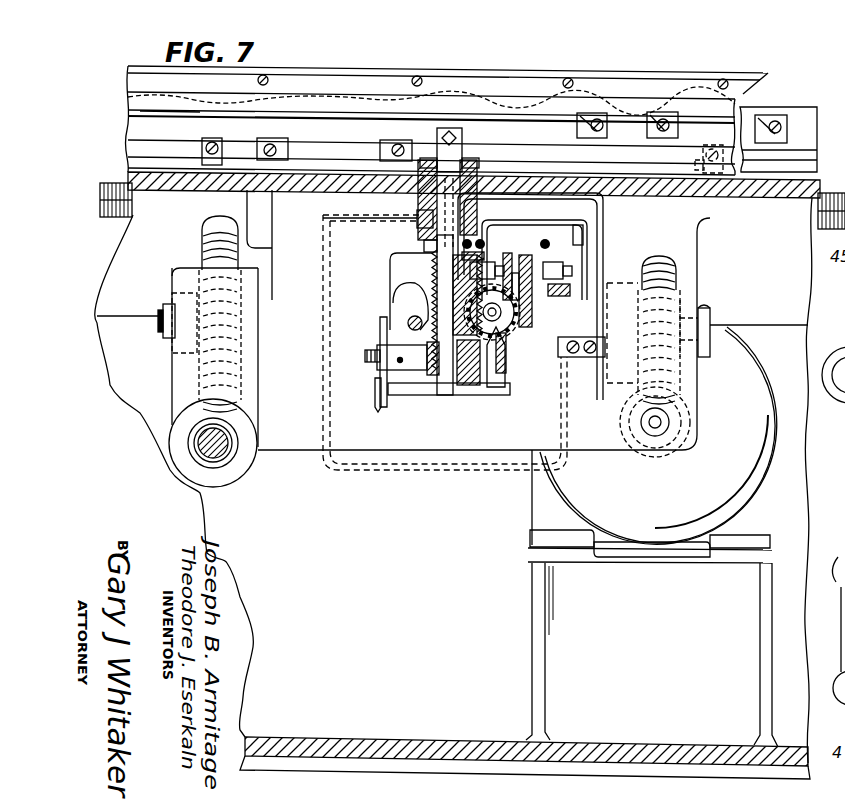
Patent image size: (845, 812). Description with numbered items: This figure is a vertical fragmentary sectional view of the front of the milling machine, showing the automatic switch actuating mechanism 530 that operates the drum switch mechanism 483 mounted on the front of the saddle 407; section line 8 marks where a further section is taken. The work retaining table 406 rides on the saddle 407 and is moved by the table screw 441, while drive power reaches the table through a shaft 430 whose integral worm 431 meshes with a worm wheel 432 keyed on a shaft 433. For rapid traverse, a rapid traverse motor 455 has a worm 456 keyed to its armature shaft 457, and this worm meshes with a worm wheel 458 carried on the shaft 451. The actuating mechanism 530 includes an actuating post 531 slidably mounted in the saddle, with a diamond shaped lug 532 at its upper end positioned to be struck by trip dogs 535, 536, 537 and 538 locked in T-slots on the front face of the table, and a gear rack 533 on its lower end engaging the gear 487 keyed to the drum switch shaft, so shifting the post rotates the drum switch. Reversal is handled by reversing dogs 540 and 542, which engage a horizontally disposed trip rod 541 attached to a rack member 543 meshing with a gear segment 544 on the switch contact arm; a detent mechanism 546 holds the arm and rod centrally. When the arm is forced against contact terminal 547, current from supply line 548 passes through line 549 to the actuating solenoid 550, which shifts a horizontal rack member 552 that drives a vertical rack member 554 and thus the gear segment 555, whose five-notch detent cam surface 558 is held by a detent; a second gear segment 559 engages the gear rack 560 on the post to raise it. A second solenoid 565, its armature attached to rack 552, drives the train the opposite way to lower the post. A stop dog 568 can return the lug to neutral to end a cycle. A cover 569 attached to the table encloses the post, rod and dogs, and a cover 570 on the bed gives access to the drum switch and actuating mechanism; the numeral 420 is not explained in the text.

The section line 8- 8 is at (460, 40).
The table 406 is at (620, 76).
The saddle 407 is at (770, 197).
The drive member 420 is at (833, 622).
The shaft 430 is at (205, 438).
The worm 431 is at (217, 455).
The worm wheel 432 is at (232, 353).
The shaft 433 is at (162, 326).
The table screw 441 is at (109, 213).
The shaft 451 is at (710, 314).
The rapid traverse motor 455 is at (752, 376).
The worm 456 is at (682, 418).
The motor armature shaft 457 is at (660, 440).
The worm wheel 458 is at (662, 256).
The drum switch mechanism 483 is at (375, 306).
The gear 487 is at (398, 380).
The automatic actuating mechanism 530 is at (432, 407).
The actuating post 531 is at (437, 260).
The diamond shaped lug 532 is at (464, 137).
The gear rack 533 is at (453, 283).
The trip dog 535 is at (392, 135).
The trip dog 536 is at (268, 133).
The trip dog 537 is at (578, 130).
The trip dog 538 is at (672, 112).
The reversing dog 540 is at (200, 152).
The trip rod 541 is at (480, 163).
The reversing dog 542 is at (692, 163).
The rack member 543 is at (493, 205).
The gear segment 544 is at (420, 200).
The detent mechanism 546 is at (430, 247).
The contact terminal 547 is at (418, 216).
The control circuit supply line 548 is at (543, 205).
The line 549 is at (328, 290).
The actuating solenoid 550 is at (562, 270).
The rack member 552 is at (530, 300).
The rack member 554 is at (515, 262).
The gear segment 555 is at (508, 335).
The detent cam surface 558 is at (603, 222).
The gear segment 559 is at (463, 386).
The gear rack 560 is at (470, 300).
The solenoid 565 is at (490, 265).
The stop dog 568 is at (795, 115).
The cover 569 is at (182, 102).
The cover 570 is at (833, 392).